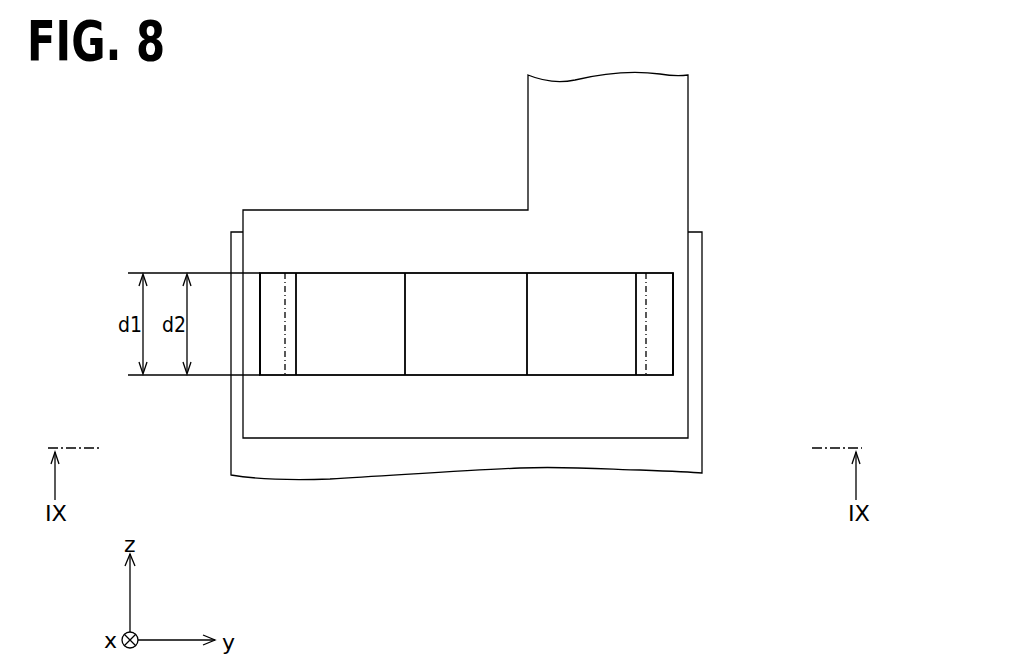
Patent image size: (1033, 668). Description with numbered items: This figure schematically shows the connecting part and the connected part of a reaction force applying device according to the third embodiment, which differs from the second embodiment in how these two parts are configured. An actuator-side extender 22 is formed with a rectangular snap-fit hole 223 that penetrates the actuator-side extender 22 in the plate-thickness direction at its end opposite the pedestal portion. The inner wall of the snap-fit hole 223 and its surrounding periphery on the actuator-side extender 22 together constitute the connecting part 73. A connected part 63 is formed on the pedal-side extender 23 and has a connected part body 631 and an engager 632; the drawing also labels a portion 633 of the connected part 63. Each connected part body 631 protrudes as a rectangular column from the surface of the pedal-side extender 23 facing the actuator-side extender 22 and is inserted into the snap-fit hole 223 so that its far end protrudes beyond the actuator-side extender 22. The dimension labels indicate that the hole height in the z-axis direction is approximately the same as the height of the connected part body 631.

The actuator-side extender 22 is at (662, 146).
The pedal-side extender 23 is at (660, 455).
The connected part 63 is at (352, 297).
The connected part body 631 is at (348, 340).
The engager 632 is at (285, 288).
The end portion 633 is at (268, 322).
The connecting part 73 is at (423, 262).
The snap-fit hole 223 is at (467, 370).